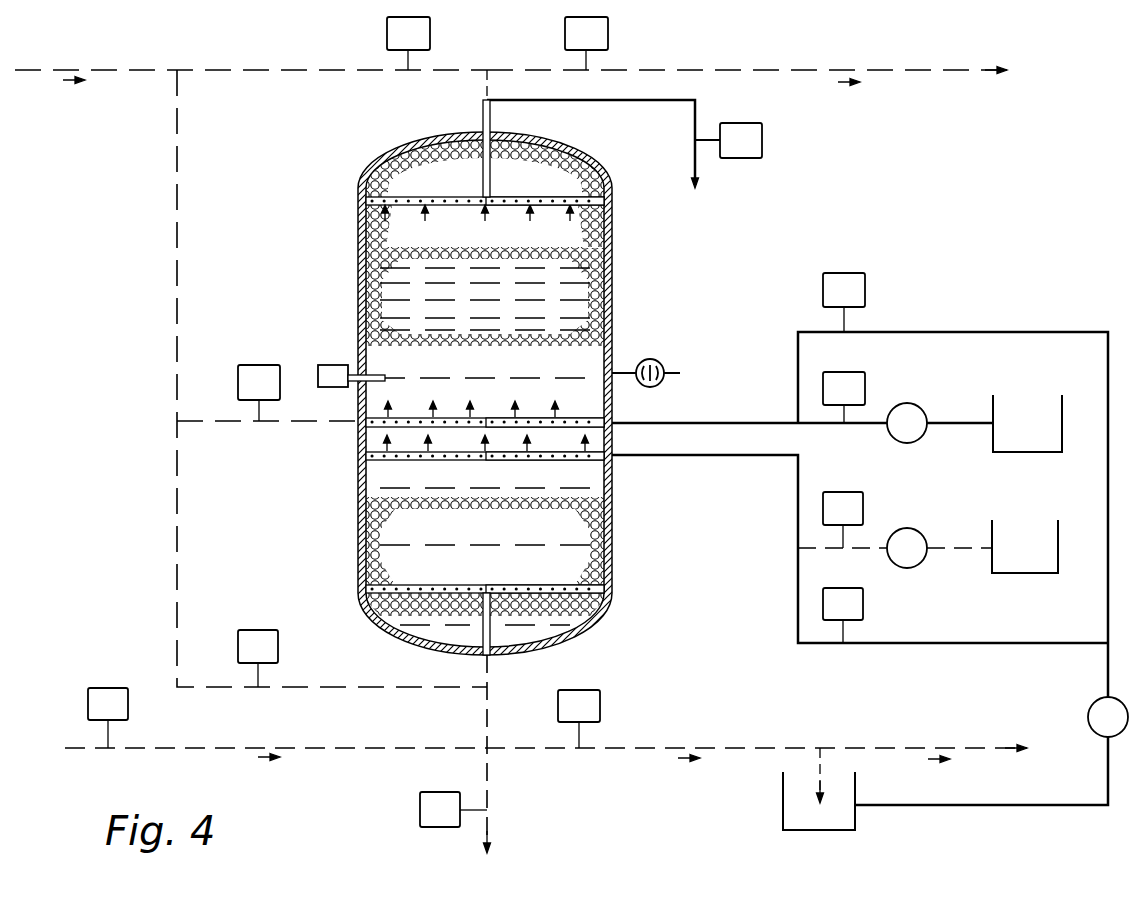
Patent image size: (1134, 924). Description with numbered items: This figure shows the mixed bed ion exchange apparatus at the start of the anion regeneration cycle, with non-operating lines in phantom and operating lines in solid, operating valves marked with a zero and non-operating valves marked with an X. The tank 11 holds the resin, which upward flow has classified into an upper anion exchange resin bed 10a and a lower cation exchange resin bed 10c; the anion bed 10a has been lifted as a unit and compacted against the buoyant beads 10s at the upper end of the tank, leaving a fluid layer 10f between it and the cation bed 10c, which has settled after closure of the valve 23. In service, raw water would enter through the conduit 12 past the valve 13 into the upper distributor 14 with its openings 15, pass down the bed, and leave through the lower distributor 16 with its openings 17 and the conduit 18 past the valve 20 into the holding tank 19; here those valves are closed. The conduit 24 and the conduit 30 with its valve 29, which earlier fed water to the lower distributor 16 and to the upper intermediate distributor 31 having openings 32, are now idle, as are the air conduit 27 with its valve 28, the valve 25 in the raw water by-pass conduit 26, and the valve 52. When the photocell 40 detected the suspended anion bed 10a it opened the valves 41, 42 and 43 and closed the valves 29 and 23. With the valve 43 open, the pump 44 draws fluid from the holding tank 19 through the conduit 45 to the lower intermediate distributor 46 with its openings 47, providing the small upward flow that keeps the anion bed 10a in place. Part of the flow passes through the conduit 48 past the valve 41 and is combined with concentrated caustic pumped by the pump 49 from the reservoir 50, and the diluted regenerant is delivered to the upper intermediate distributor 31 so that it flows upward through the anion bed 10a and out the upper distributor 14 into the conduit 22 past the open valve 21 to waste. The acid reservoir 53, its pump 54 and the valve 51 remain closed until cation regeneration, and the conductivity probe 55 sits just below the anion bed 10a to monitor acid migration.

The beads 10s is at (410, 162).
The anion exchange resin bed 10a is at (612, 286).
The fluid layer 10f is at (612, 391).
The cation exchange resin bed 10c is at (612, 531).
The tank 11 is at (358, 483).
The conduit 12 is at (268, 69).
The valve 13 is at (430, 26).
The upper distributor 14 is at (448, 196).
The openings 15 is at (524, 196).
The lower distributor 16 is at (428, 586).
The openings 17 is at (546, 586).
The conduit 18 is at (487, 712).
The holding tank 19 is at (783, 818).
The valve 20 is at (600, 689).
The valve 21 is at (762, 134).
The conduit 22 is at (612, 103).
The valve 23 is at (255, 629).
The conduit 24 is at (177, 270).
The valve 25 is at (608, 28).
The raw water by-pass conduit 26 is at (673, 69).
The conduit 27 is at (372, 747).
The valve 28 is at (103, 687).
The valve 29 is at (256, 364).
The conduit 30 is at (222, 422).
The upper intermediate distributor 31 is at (436, 416).
The openings 32 is at (525, 416).
The photocell 40 is at (660, 360).
The valve 41 is at (865, 282).
The valve 42 is at (858, 371).
The valve 43 is at (850, 587).
The pump 44 is at (1092, 703).
The conduit 45 is at (950, 644).
The lower intermediate distributor 46 is at (440, 461).
The openings 47 is at (542, 461).
The conduit 48 is at (1014, 331).
The pump 49 is at (916, 443).
The reservoir 50 is at (1030, 452).
The valve 51 is at (850, 491).
The valve 52 is at (420, 796).
The reservoir 53 is at (1035, 574).
The pump 54 is at (921, 565).
The conductivity probe 55 is at (330, 364).